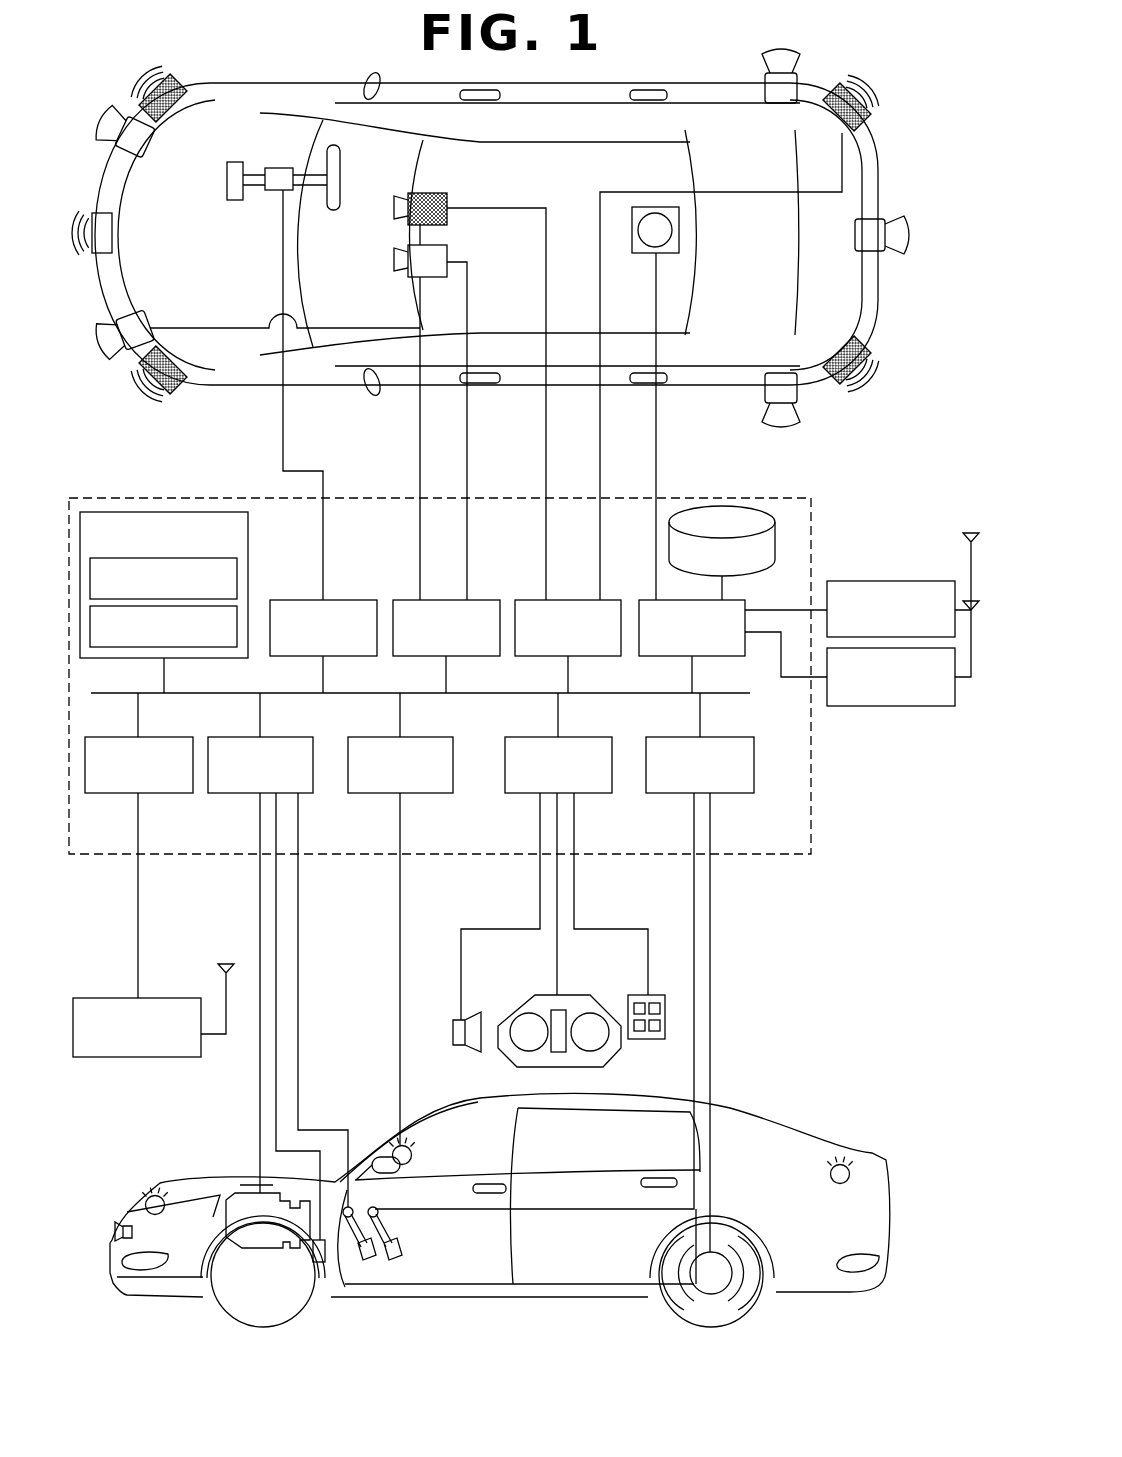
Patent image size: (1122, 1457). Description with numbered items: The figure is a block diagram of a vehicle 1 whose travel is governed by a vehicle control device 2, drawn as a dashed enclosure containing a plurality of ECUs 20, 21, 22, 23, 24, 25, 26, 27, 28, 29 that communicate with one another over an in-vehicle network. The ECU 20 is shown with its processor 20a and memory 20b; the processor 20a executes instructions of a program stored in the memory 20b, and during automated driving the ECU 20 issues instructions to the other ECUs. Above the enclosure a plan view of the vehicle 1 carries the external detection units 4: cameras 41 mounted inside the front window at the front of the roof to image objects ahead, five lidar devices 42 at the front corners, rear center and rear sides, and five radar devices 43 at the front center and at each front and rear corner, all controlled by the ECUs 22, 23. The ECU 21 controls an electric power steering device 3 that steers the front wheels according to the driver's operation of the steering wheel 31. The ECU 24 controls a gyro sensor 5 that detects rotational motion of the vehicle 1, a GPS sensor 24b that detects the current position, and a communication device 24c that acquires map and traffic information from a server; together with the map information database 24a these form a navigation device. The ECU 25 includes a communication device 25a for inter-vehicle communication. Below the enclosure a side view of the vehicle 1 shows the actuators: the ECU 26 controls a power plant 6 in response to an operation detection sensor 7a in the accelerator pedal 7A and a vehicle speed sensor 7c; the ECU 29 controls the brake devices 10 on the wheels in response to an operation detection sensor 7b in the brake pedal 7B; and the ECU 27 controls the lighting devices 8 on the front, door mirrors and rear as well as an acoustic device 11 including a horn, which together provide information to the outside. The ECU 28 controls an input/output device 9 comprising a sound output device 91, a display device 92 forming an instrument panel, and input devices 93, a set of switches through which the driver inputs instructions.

The vehicle 1 is at (888, 128).
The vehicle control device 2 is at (786, 860).
The electric power steering device 3 is at (235, 200).
The steering wheel 31 is at (334, 210).
The detection units 4 is at (121, 94).
The cameras 41 is at (450, 218).
The lidar devices 42 is at (145, 158).
The radar devices 43 is at (165, 110).
The gyro sensor 5 is at (679, 228).
The power plant 6 is at (232, 1192).
The operation detection sensor 7a is at (366, 1160).
The operation detection sensor 7b is at (382, 1205).
The vehicle speed sensor 7c is at (319, 1262).
The accelerator pedal 7A is at (380, 1253).
The brake pedal 7B is at (403, 1240).
The lighting devices 8 is at (143, 1197).
The input/output device 9 is at (490, 1069).
The sound output device 91 is at (453, 1026).
The display device 92 is at (518, 1008).
The input devices 93 is at (650, 1039).
The brake devices 10 is at (718, 1294).
The acoustic device 11 is at (113, 1231).
The ECU 20 is at (199, 572).
The processor 20a is at (237, 578).
The memory 20b is at (237, 627).
The ECU 21 is at (362, 600).
The ECU 22 is at (453, 600).
The ECU 23 is at (576, 600).
The ECU 24 is at (642, 600).
The map information database 24a is at (720, 506).
The GPS sensor 24b is at (888, 581).
The communication device 24c is at (888, 706).
The ECU 25 is at (170, 793).
The communication device 25a is at (139, 1057).
The ECU 26 is at (236, 793).
The ECU 27 is at (434, 793).
The ECU 28 is at (597, 793).
The ECU 29 is at (738, 793).